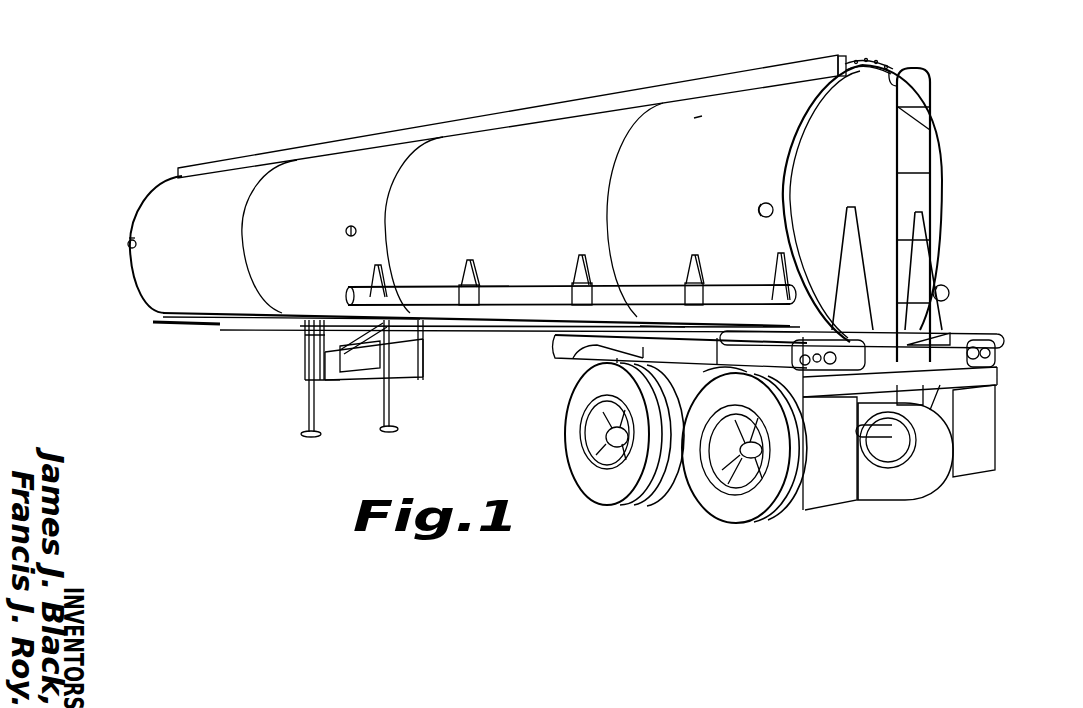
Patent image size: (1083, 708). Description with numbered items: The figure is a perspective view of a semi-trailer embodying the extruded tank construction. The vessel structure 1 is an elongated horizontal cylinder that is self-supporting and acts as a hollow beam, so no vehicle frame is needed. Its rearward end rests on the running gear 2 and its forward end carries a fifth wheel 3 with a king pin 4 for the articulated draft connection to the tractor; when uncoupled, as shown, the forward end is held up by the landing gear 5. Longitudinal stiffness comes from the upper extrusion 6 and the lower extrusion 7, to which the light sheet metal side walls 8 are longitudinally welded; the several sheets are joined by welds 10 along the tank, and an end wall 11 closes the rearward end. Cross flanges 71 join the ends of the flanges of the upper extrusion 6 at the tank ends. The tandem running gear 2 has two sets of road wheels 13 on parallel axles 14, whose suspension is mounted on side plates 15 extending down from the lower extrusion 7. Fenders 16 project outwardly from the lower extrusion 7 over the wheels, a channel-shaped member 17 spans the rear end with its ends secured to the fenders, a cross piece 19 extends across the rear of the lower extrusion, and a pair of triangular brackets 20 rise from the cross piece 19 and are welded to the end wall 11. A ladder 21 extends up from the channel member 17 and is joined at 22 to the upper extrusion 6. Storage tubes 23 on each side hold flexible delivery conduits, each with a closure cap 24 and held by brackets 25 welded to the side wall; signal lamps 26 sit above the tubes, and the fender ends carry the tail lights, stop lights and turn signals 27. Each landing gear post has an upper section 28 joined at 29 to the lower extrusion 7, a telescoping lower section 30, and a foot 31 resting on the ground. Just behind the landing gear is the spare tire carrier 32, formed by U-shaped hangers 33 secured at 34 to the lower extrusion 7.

The vessel structure 1 is at (243, 186).
The running gear 2 is at (873, 512).
The fifth wheel 3 is at (206, 330).
The king pin 4 is at (231, 338).
The landing gear 5 is at (349, 398).
The upper longitudinal extrusion 6 is at (489, 114).
The lower longitudinal extrusion 7 is at (514, 330).
The side walls 8 is at (698, 120).
The welds 10 is at (246, 213).
The end wall 11 is at (832, 115).
The road wheels 13 is at (600, 490).
The axles 14 is at (605, 437).
The side plates 15 is at (657, 325).
The fenders 16 is at (733, 330).
The channel-shaped member 17 is at (985, 372).
The cross piece 19 is at (912, 338).
The triangular brackets 20 is at (851, 268).
The ladder 21 is at (933, 118).
The ladder upper joint 22 is at (847, 62).
The storage tubes 23 is at (530, 287).
The closure cap 24 is at (346, 292).
The brackets 25 is at (466, 266).
The signal lamps 26 is at (131, 241).
The tail lights, stop lights and turn signals 27 is at (800, 355).
The upper section 28 is at (305, 351).
The joint 29 is at (312, 325).
The lower section 30 is at (309, 408).
The foot 31 is at (302, 434).
The spare tire carrier 32 is at (432, 376).
The U-shaped hangers 33 is at (425, 348).
The hanger attachment 34 is at (403, 338).
The cross flanges 71 is at (838, 60).